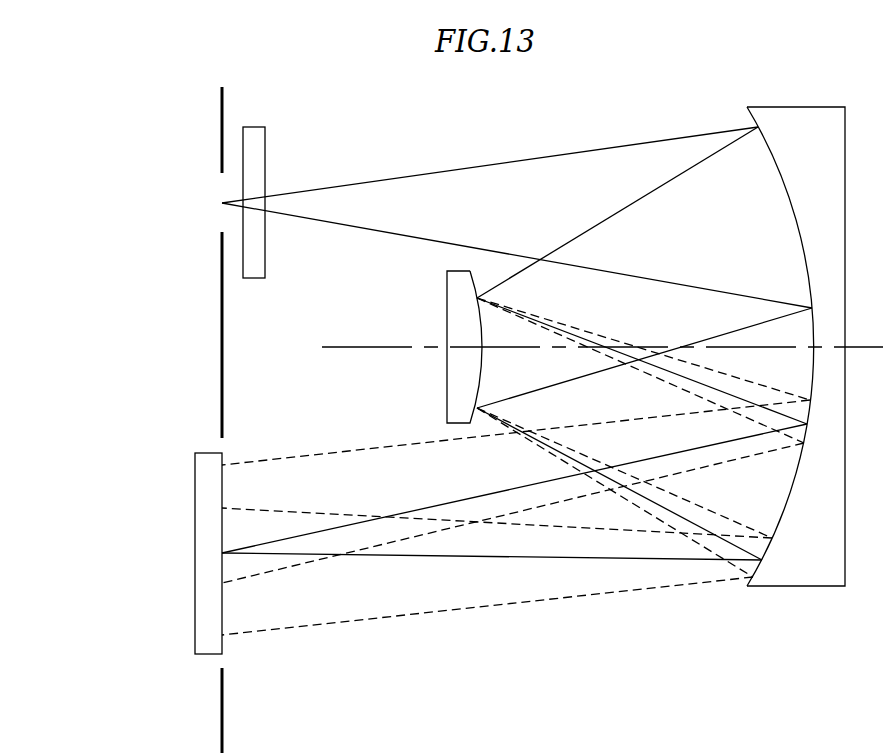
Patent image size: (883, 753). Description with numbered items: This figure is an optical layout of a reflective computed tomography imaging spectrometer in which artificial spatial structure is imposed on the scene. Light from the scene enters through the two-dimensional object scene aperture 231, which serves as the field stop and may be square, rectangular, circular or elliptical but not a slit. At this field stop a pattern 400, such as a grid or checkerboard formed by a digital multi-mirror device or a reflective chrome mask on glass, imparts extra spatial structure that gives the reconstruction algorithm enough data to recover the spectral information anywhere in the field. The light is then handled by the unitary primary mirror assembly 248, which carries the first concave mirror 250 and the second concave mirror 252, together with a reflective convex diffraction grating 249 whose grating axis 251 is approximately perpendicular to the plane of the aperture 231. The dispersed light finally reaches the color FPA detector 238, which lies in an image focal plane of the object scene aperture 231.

The object scene aperture 231 is at (194, 183).
The pattern 400 is at (265, 149).
The primary mirror assembly 248 is at (795, 107).
The first concave mirror 250 is at (793, 208).
The lens 249 is at (482, 370).
The grating axis 251 is at (375, 345).
The color FPA detector 238 is at (222, 613).
The second concave mirror 252 is at (790, 497).